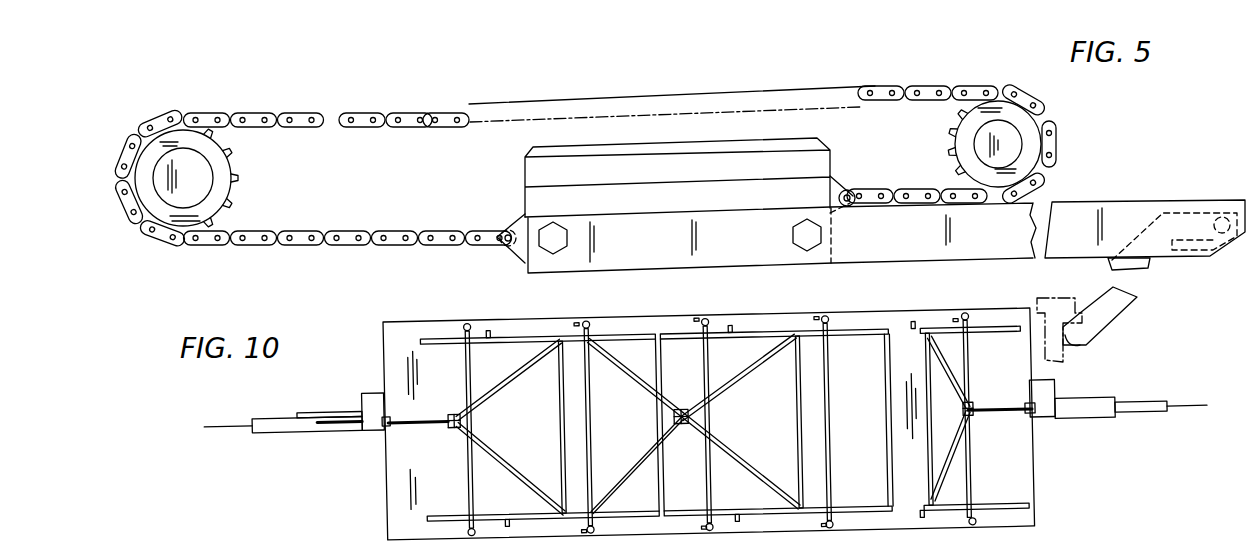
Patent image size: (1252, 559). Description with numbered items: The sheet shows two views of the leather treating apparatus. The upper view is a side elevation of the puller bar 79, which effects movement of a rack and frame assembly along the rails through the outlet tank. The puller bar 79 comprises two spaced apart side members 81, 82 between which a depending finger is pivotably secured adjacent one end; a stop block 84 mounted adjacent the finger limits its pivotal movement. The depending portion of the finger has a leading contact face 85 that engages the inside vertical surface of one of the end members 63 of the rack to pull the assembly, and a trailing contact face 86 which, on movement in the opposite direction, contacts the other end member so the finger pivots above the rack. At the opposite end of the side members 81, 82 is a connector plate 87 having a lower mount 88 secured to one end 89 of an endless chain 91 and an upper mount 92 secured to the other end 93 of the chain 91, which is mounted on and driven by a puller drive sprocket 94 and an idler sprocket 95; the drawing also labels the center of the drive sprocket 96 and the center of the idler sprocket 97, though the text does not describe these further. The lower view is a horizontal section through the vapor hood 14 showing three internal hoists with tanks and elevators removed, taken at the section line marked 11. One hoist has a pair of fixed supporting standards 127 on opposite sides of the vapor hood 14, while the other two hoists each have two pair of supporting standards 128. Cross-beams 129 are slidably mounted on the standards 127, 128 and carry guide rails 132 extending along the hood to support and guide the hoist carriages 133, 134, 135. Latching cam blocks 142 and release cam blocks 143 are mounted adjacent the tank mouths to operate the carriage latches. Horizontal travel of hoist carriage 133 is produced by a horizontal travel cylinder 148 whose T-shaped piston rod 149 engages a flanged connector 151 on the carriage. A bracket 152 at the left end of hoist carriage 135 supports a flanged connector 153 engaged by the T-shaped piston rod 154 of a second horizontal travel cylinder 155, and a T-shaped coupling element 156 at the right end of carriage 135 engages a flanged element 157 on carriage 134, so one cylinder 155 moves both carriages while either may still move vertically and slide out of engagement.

In FIG. 10, the section line 11- 11 is at (155, 448).
In FIG. 10, the vapor hood 14 is at (1022, 558).
In FIG. 10, the end member 63 is at (1056, 298).
In FIG. 5, the puller bar 79 is at (1140, 194).
In FIG. 5, the side member 81 is at (780, 246).
In FIG. 5, the side member 82 is at (862, 265).
In FIG. 5, the stop block 84 is at (1196, 255).
In FIG. 10, the leading contact face 85 is at (1073, 345).
In FIG. 10, the trailing contact face 86 is at (1120, 313).
In FIG. 5, the connector plate 87 is at (822, 158).
In FIG. 5, the lower mount 88 is at (515, 252).
In FIG. 5, the end of endless chain 89 is at (489, 232).
In FIG. 5, the endless chain 91 is at (466, 102).
In FIG. 5, the upper mount 92 is at (840, 207).
In FIG. 5, the end of endless chain 93 is at (863, 190).
In FIG. 5, the puller drive sprocket 94 is at (237, 170).
In FIG. 5, the idler sprocket 95 is at (948, 138).
In FIG. 5, the sprocket shaft 96 is at (182, 160).
In FIG. 5, the sprocket shaft 97 is at (998, 127).
In FIG. 10, the fixed supporting standard 127 is at (966, 534).
In FIG. 10, the supporting standard 128 is at (470, 330).
In FIG. 10, the cross-beam 129 is at (472, 449).
In FIG. 10, the guide rail 132 is at (657, 346).
In FIG. 10, the hoist carriage 133 is at (952, 400).
In FIG. 10, the hoist carriage 134 is at (792, 402).
In FIG. 10, the hoist carriage 135 is at (552, 391).
In FIG. 10, the latching cam block 142 is at (510, 345).
In FIG. 10, the release cam block 143 is at (488, 341).
In FIG. 10, the horizontal travel cylinder 148 is at (1087, 418).
In FIG. 10, the T-shaped piston rod 149 is at (990, 420).
In FIG. 10, the flanged connector 151 is at (972, 427).
In FIG. 10, the bracket 152 is at (460, 415).
In FIG. 10, the flanged connector 153 is at (447, 431).
In FIG. 10, the T-shaped piston rod 154 is at (410, 429).
In FIG. 10, the second horizontal travel cylinder 155 is at (347, 399).
In FIG. 10, the T-shaped coupling element 156 is at (677, 416).
In FIG. 10, the flanged element 157 is at (683, 431).